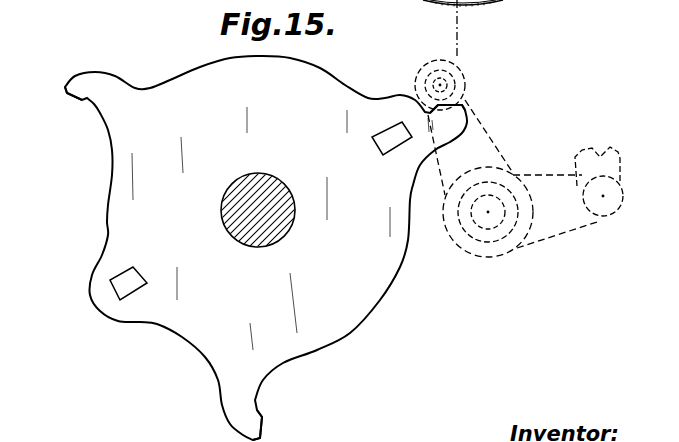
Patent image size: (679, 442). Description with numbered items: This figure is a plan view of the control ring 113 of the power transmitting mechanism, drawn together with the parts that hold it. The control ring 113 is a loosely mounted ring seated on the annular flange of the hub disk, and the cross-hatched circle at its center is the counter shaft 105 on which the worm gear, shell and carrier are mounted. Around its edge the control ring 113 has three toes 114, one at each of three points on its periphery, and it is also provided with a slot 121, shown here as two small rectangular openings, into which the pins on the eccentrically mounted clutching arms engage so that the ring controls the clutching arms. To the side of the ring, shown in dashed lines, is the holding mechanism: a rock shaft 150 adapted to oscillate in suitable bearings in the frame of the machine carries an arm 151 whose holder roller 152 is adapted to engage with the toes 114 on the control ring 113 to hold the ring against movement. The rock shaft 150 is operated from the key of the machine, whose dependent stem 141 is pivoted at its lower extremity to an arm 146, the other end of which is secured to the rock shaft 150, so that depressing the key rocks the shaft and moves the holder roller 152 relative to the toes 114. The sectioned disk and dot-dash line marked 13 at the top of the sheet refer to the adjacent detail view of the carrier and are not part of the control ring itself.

The Fig. 13 (detail view of the carrier) 13 is at (497, 32).
The counter shaft 105 is at (291, 225).
The control ring 113 is at (266, 248).
The toes 114 is at (65, 89).
The slot 121 is at (383, 143).
The dependent stem 141 is at (607, 165).
The arm 146 is at (600, 208).
The rock shaft 150 is at (488, 222).
The arm 151 is at (490, 132).
The holder roller 152 is at (458, 80).